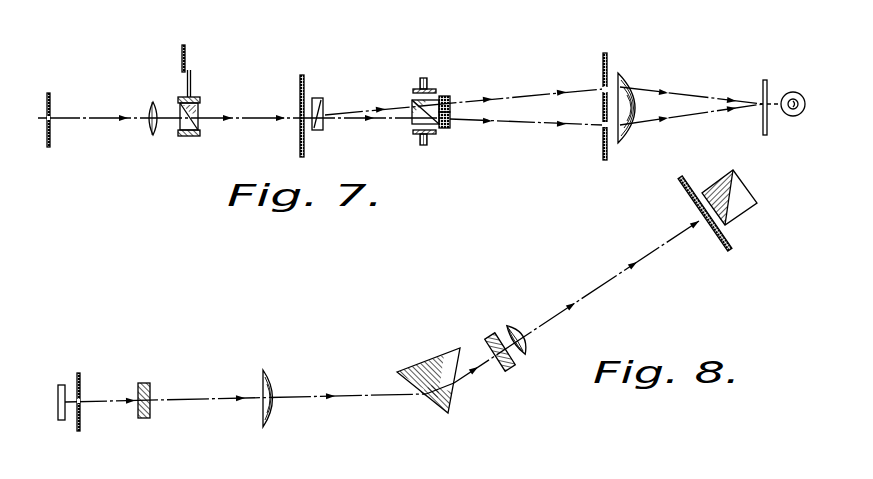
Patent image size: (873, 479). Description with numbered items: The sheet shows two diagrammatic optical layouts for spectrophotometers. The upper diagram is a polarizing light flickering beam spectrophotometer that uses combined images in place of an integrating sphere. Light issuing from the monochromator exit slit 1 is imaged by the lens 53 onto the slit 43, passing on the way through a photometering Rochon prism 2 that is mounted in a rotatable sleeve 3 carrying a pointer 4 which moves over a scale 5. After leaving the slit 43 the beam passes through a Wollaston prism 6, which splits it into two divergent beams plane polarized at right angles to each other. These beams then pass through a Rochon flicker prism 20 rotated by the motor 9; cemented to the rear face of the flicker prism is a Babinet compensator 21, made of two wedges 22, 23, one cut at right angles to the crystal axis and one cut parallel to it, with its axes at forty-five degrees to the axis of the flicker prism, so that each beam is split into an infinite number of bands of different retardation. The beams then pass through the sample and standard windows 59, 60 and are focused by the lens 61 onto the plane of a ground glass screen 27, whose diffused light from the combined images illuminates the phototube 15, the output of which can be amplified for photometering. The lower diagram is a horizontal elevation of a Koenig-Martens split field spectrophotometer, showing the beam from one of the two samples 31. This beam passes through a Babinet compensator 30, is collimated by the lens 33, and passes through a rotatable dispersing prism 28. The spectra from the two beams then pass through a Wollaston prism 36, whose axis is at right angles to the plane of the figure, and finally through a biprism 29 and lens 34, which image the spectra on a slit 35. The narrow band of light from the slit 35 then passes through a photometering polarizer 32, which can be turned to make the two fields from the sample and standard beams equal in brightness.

In FIG. 7, the monochromator exit slit 1 is at (52, 116).
In FIG. 7, the lens 53 is at (152, 136).
In FIG. 7, the photometering Rochon prism 2 is at (199, 108).
In FIG. 7, the rotatable sleeve 3 is at (191, 137).
In FIG. 7, the pointer 4 is at (191, 66).
In FIG. 7, the scale 5 is at (182, 56).
In FIG. 7, the slit 43 is at (301, 118).
In FIG. 7, the Wollaston prism 6 is at (320, 97).
In FIG. 7, the Rochon flicker prism 20 is at (412, 102).
In FIG. 7, the Babinet compensator 21 is at (451, 99).
In FIG. 7, the wedge 22 is at (445, 96).
In FIG. 7, the motor 9 is at (423, 83).
In FIG. 7, the wedge 23 is at (451, 107).
In FIG. 7, the standard window 60 is at (603, 89).
In FIG. 7, the sample window 59 is at (603, 126).
In FIG. 7, the lens 61 is at (632, 86).
In FIG. 7, the ground glass screen 27 is at (763, 84).
In FIG. 7, the phototube 15 is at (793, 92).
In FIG. 8, the sample 31 is at (61, 385).
In FIG. 8, the Babinet compensator 30 is at (147, 383).
In FIG. 8, the lens 33 is at (265, 370).
In FIG. 8, the rotatable dispersing prism 28 is at (419, 364).
In FIG. 8, the Wollaston prism 36 is at (507, 368).
In FIG. 8, the lens 34 is at (518, 323).
In FIG. 8, the biprism 29 is at (507, 331).
In FIG. 8, the slit 35 is at (700, 213).
In FIG. 8, the photometering polarizer 32 is at (741, 211).